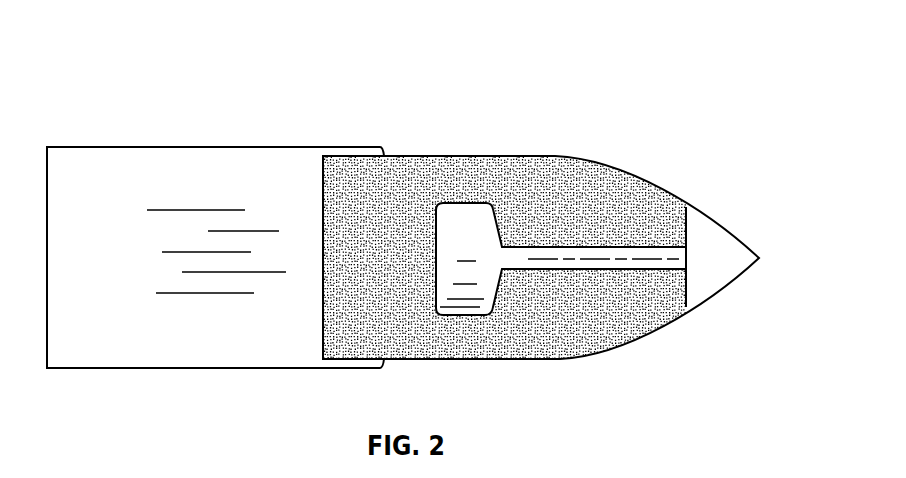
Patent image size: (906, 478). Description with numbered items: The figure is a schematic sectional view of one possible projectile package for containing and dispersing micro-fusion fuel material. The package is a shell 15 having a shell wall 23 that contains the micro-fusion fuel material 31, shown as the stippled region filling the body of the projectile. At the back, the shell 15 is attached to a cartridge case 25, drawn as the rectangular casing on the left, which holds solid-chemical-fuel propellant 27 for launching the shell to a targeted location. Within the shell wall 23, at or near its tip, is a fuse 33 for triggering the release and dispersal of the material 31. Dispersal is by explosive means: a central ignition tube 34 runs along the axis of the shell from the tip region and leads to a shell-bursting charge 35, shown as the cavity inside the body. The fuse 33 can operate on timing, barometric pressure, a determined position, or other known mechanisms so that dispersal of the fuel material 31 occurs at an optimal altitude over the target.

The shell 15 is at (109, 56).
The cartridge case 25 is at (224, 147).
The solid-chemical-fuel propellant 27 is at (114, 268).
The shell wall 23 is at (451, 156).
The micro-fusion fuel material 31 is at (558, 181).
The fuse 33 is at (712, 244).
The shell-bursting charge 35 is at (480, 312).
The central ignition tube 34 is at (650, 255).